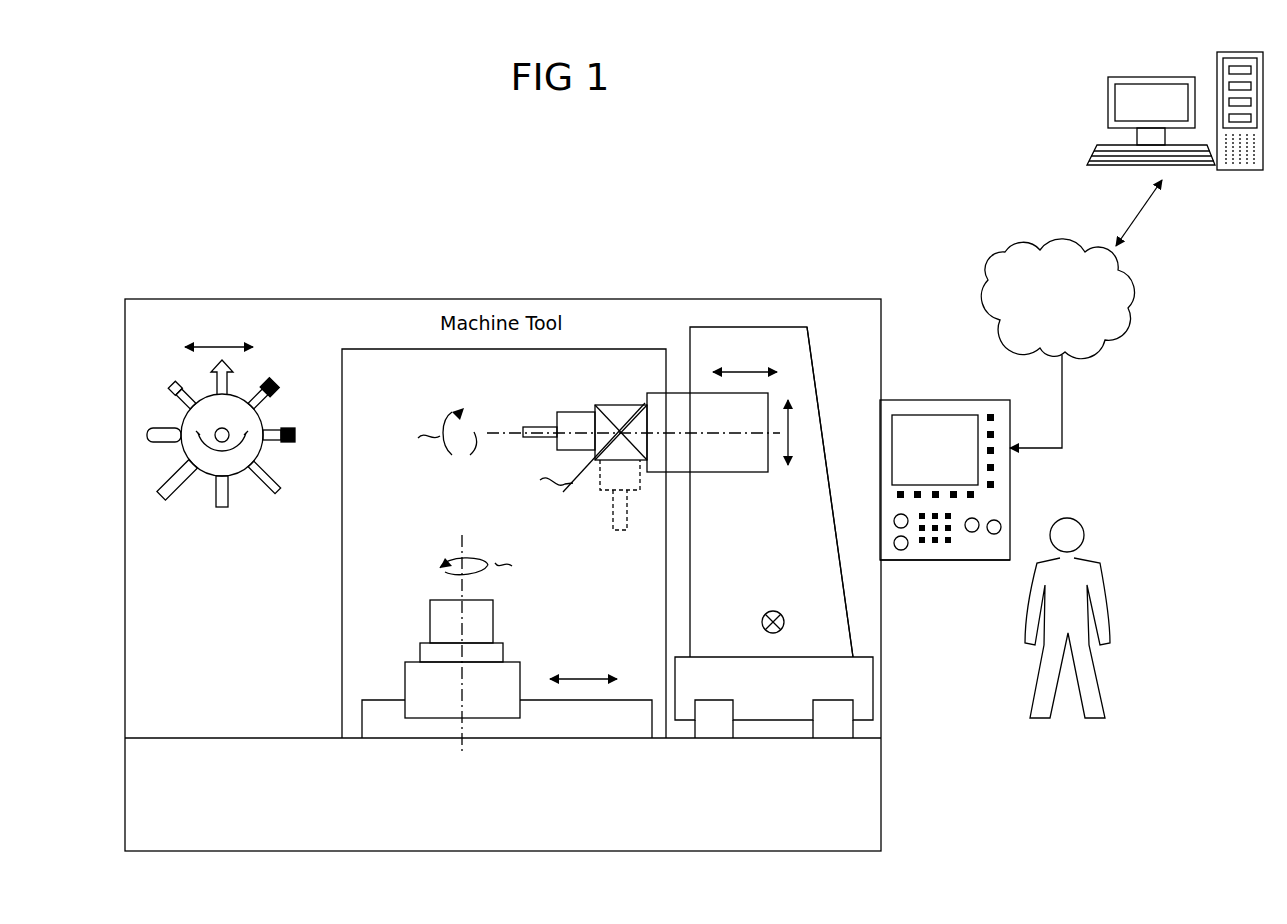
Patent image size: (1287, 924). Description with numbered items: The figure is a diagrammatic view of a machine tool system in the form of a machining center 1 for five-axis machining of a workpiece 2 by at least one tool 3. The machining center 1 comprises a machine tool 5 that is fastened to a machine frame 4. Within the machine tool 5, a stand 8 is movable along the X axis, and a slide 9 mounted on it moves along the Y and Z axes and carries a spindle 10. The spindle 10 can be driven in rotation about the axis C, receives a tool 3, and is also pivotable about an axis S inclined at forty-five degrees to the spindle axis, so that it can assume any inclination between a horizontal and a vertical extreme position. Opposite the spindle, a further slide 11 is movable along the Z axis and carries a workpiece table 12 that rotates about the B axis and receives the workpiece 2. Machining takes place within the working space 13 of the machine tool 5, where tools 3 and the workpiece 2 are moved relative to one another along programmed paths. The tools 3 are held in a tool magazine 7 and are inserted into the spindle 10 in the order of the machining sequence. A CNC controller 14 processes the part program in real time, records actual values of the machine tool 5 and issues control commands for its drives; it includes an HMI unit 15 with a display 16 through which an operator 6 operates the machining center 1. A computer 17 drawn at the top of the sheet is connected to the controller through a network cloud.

The machining center 1 is at (968, 748).
The workpiece 2 is at (493, 620).
The tool 3 is at (536, 425).
The machine frame 4 is at (882, 820).
The machine tool 5 is at (665, 345).
The operator 6 is at (1100, 568).
The tool magazine 7 is at (190, 537).
The stand 8 is at (833, 508).
The slide 9 is at (728, 475).
The spindle 10 is at (570, 412).
The slide 11 is at (440, 708).
The workpiece table 12 is at (420, 652).
The working space 13 is at (342, 553).
The CNC controller 14 is at (954, 390).
The HMI unit 15 is at (952, 565).
The display 16 is at (920, 413).
The computer 17 is at (1203, 195).